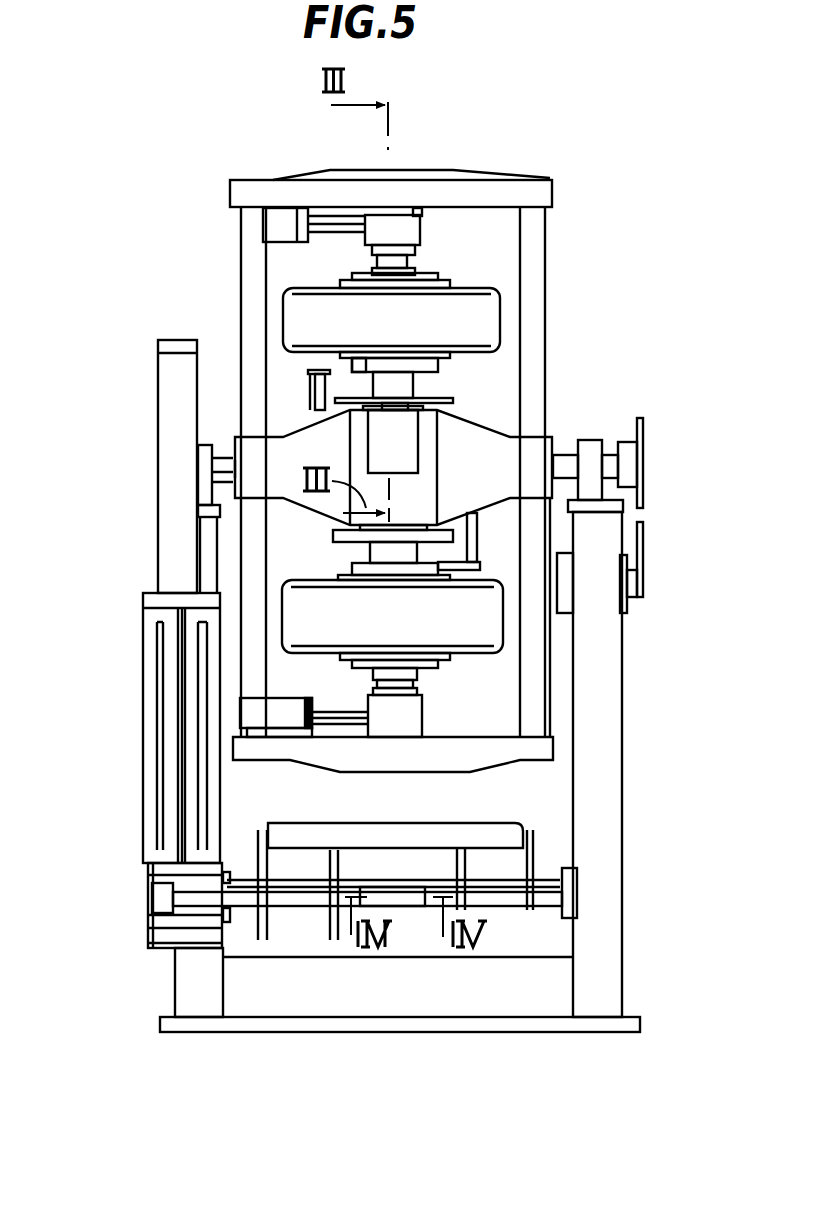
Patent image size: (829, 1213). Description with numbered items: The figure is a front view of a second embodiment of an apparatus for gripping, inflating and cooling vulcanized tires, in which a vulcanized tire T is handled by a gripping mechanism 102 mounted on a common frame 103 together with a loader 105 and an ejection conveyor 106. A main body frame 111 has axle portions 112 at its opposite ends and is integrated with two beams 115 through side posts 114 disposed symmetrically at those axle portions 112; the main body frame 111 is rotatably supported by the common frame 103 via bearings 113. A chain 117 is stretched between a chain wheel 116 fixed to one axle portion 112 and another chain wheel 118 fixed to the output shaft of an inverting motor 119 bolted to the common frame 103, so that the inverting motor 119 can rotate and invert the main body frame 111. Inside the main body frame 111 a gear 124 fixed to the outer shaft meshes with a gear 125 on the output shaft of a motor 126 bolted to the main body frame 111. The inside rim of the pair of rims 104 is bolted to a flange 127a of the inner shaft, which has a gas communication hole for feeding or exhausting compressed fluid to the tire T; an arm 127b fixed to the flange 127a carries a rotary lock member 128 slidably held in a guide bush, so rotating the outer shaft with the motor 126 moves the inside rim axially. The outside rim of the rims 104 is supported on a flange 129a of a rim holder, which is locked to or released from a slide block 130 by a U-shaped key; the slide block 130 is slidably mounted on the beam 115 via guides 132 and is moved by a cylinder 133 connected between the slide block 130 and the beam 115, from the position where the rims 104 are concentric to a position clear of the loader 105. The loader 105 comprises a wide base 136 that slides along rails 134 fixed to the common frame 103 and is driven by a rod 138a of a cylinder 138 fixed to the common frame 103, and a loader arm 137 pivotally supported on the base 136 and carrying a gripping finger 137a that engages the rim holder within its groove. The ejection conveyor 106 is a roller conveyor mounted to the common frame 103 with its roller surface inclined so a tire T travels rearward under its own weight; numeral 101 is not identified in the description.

The support bar 101 is at (220, 408).
The gripping mechanism 102 is at (348, 253).
The common frame 103 is at (612, 920).
The rim 104 is at (430, 350).
The loader 105 is at (148, 737).
The ejection conveyor 106 is at (490, 832).
The main body frame 111 is at (253, 488).
The axle portion 112 is at (222, 472).
The bearing 113 is at (203, 458).
The side post 114 is at (250, 580).
The beam 115 is at (252, 748).
The chain wheel 116 is at (642, 492).
The chain 117 is at (643, 540).
The chain wheel 118 is at (640, 595).
The inverting motor 119 is at (625, 613).
The gear 124 is at (397, 398).
The gear 125 is at (365, 370).
The motor 126 is at (412, 452).
The flange 127a is at (367, 365).
The arm 127b is at (314, 372).
The rotary lock member 128 is at (313, 398).
The flange 129a is at (433, 270).
The slide block 130 is at (425, 217).
The guide 132 is at (407, 225).
The cylinder 133 is at (280, 222).
The rail 134 is at (158, 783).
The wide base 136 is at (162, 932).
The loader arm 137 is at (162, 898).
The gripping finger 137a is at (385, 897).
The cylinder 138 is at (170, 543).
The rod 138a is at (185, 817).
The vulcanized tire T is at (493, 320).